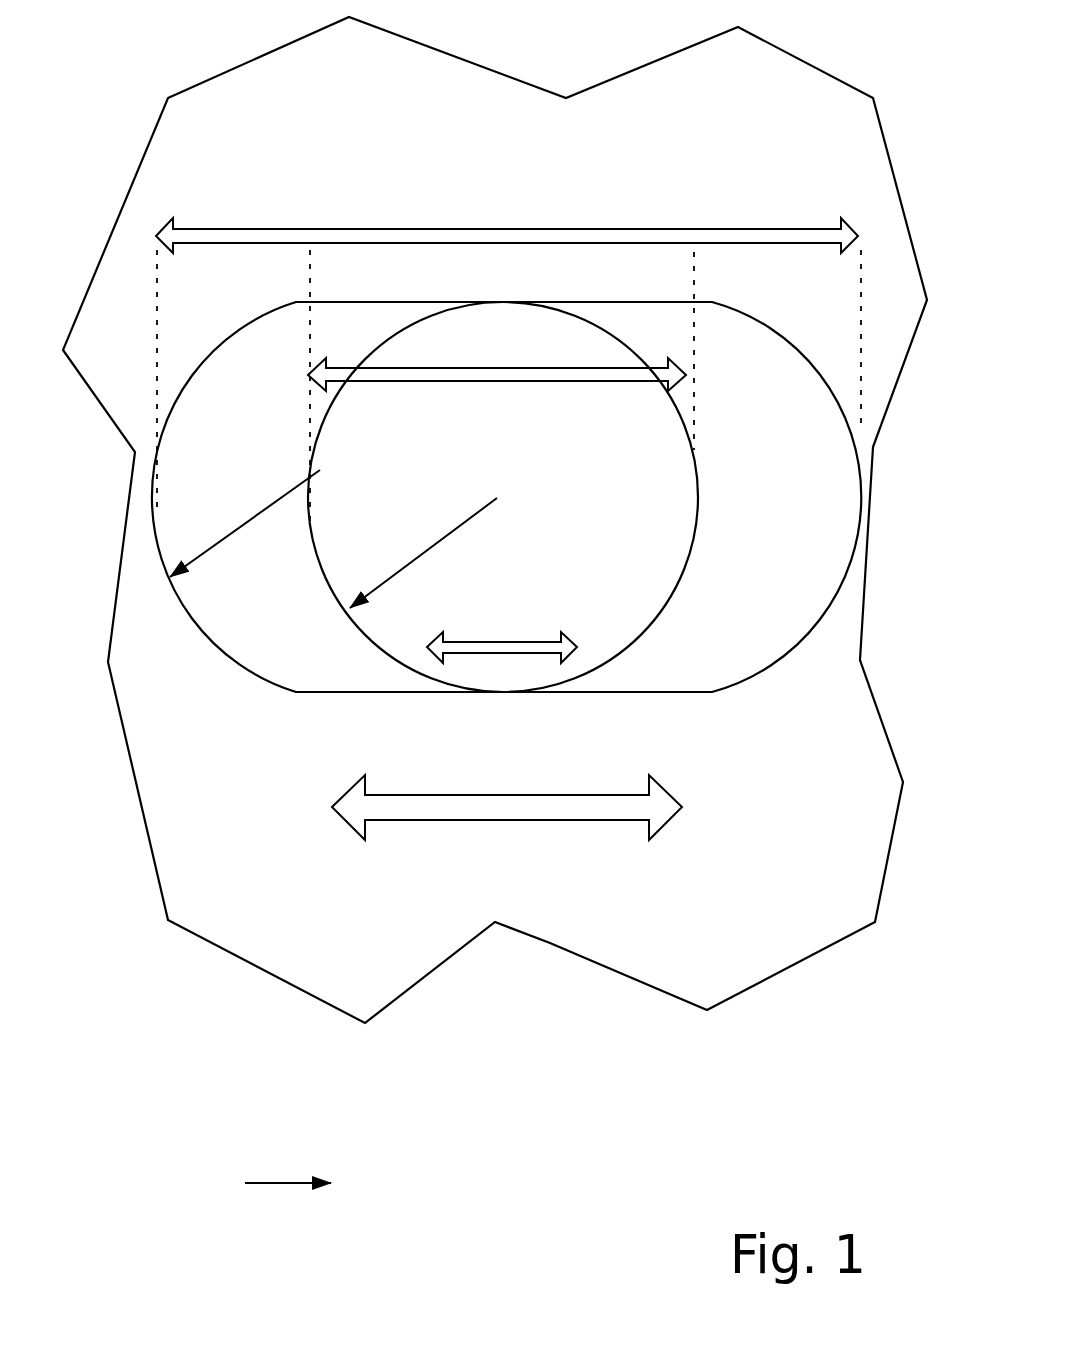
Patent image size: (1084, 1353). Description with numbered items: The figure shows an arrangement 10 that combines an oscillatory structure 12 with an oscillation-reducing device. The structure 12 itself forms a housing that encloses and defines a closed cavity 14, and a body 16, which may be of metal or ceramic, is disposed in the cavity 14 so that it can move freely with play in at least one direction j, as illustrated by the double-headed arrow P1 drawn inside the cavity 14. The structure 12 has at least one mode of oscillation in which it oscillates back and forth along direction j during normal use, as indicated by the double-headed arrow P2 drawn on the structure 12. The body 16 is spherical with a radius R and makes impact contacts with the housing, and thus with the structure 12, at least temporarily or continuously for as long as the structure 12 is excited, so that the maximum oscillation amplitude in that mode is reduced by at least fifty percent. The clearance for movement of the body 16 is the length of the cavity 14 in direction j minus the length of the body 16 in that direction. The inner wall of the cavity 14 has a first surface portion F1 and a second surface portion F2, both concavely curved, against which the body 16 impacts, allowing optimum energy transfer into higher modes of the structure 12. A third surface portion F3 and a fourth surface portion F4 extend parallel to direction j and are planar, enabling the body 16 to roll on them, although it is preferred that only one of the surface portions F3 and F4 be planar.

The arrangement 10 is at (500, 638).
The oscillatory structure 12 is at (740, 932).
The cavity 14 is at (295, 623).
The body 16 is at (603, 523).
The first surface portion F1 is at (166, 471).
The second surface portion F2 is at (818, 381).
The third surface portion F3 is at (659, 689).
The fourth surface portion F4 is at (702, 304).
The double-headed arrow P1 is at (502, 643).
The double-headed arrow P2 is at (457, 812).